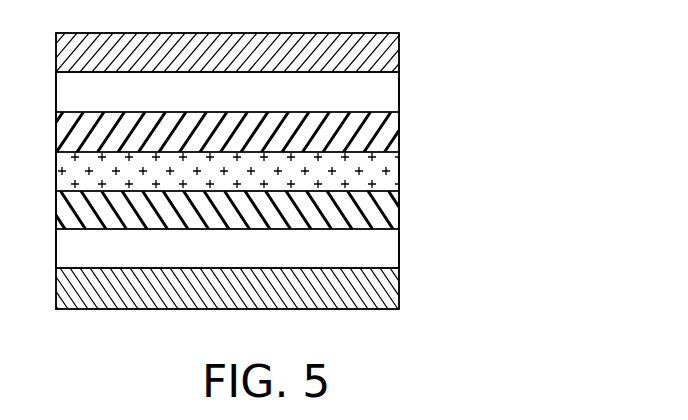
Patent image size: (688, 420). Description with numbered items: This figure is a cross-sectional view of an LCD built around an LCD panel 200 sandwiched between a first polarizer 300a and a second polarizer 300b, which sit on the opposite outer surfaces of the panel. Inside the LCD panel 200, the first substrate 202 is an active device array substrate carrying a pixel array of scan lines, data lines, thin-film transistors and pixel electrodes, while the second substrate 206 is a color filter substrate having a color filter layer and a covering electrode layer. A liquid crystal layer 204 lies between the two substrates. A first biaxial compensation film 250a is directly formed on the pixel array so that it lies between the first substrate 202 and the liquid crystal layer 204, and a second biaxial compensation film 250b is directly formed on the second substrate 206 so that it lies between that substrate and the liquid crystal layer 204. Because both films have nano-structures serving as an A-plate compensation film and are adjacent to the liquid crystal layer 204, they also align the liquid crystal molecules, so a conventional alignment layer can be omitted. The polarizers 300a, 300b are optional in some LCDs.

The LCD panel 200 is at (521, 72).
The first substrate 202 is at (399, 250).
The liquid crystal layer 204 is at (399, 175).
The second substrate 206 is at (399, 94).
The first biaxial compensation film 250a is at (399, 212).
The second biaxial compensation film 250b is at (399, 134).
The first polarizer 300a is at (399, 292).
The second polarizer 300b is at (399, 51).